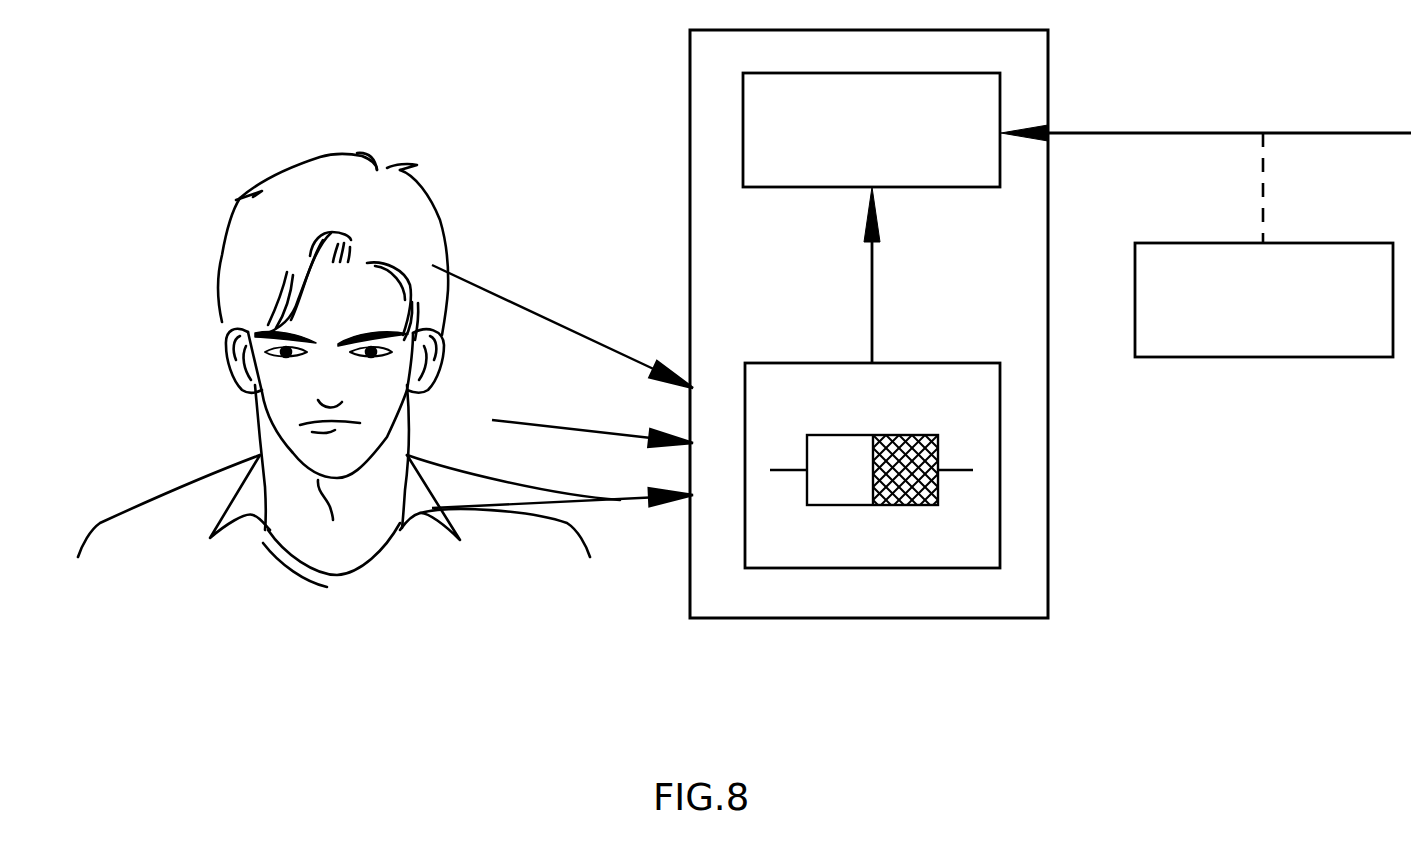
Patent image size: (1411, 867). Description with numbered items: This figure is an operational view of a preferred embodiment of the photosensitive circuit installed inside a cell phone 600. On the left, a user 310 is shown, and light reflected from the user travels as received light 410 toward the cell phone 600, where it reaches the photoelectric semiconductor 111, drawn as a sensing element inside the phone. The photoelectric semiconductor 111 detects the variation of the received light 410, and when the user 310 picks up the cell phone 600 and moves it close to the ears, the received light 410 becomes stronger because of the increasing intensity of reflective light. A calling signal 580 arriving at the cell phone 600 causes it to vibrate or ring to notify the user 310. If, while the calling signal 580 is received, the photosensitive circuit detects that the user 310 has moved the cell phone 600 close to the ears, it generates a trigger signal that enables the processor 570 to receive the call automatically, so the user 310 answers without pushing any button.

The user 310 is at (268, 158).
The received light 410 is at (565, 497).
The processor 570 is at (903, 148).
The calling signal 580 is at (1294, 320).
The cell phone 600 is at (1028, 298).
The photoelectric semiconductor 111 is at (898, 570).